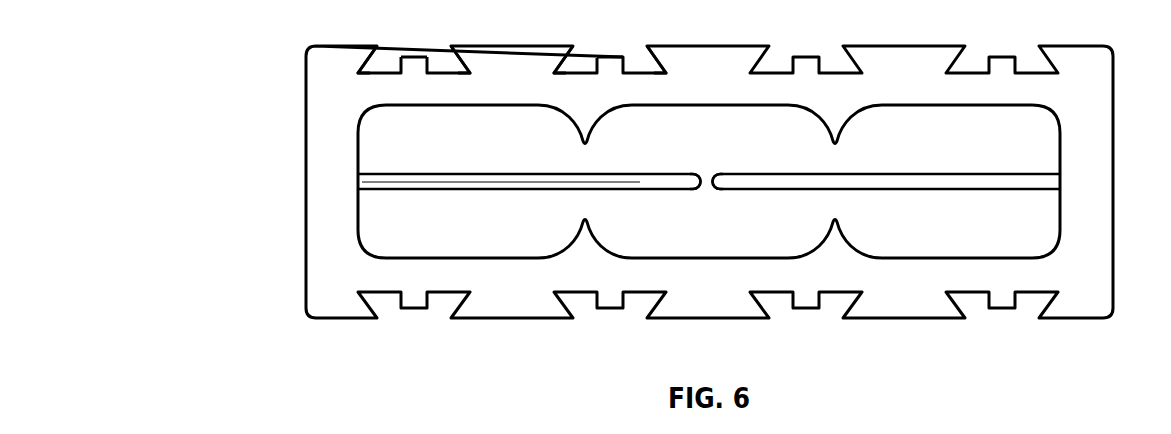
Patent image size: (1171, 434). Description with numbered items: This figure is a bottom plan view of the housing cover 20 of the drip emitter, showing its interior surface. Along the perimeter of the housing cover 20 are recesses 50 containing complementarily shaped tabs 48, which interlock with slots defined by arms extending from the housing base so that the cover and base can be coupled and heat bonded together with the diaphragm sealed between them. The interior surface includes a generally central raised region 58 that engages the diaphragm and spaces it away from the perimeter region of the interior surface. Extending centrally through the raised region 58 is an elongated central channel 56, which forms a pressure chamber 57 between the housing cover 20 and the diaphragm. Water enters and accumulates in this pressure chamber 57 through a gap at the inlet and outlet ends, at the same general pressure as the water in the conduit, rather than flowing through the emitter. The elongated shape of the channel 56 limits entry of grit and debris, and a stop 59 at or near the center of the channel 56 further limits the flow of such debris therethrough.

The housing cover 20 is at (250, 72).
The tabs 48 is at (413, 59).
The recesses 50 is at (396, 62).
The central channel 56 is at (435, 185).
The pressure chamber 57 is at (364, 182).
The raised region 58 is at (490, 247).
The stop 59 is at (711, 180).